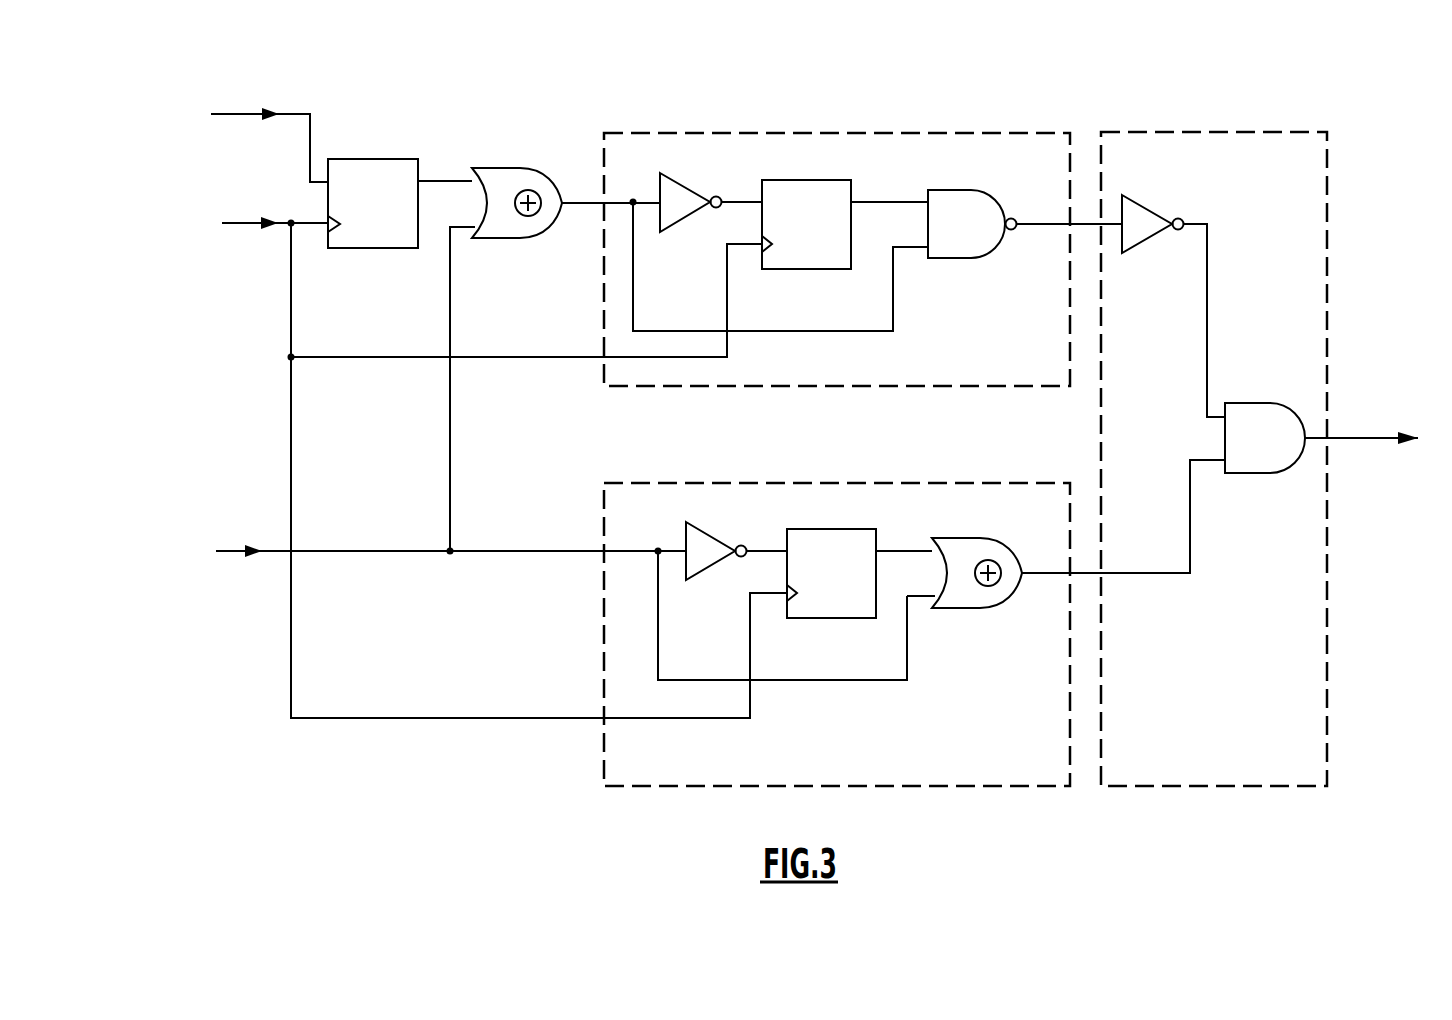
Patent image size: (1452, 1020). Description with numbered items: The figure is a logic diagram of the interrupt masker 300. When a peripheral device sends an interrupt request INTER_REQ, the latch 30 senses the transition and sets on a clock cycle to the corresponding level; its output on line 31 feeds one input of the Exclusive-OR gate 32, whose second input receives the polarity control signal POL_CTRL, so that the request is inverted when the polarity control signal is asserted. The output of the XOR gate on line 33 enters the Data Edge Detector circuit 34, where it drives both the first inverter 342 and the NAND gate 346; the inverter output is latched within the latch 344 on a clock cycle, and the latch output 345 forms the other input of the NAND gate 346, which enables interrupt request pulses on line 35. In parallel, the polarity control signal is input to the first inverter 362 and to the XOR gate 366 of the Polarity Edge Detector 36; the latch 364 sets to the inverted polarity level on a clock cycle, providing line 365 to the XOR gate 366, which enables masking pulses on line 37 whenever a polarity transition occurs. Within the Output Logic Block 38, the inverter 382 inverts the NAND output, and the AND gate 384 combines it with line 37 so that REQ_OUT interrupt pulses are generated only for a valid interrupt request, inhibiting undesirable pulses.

The interrupt masker 300 is at (1149, 87).
The latch 30 is at (373, 255).
The output line of latch 31 is at (439, 171).
The Exclusive-OR gate 32 is at (521, 250).
The output line of XOR gate 33 is at (585, 193).
The Data Edge Detector circuit 34 is at (664, 128).
The first inverter 342 is at (682, 177).
The latch 344 is at (797, 177).
The output line of latch 345 is at (879, 193).
The NAND gate 346 is at (985, 179).
The interrupt request pulse line 35 is at (1084, 216).
The Polarity Edge Detector 36 is at (901, 780).
The first inverter 362 is at (707, 522).
The latch 364 is at (821, 526).
The output line of latch 365 is at (898, 543).
The XOR gate 366 is at (949, 529).
The masking pulse line 37 is at (1181, 537).
The Output Logic Block 38 is at (1267, 647).
The inverter 382 is at (1145, 197).
The AND gate 384 is at (1251, 398).